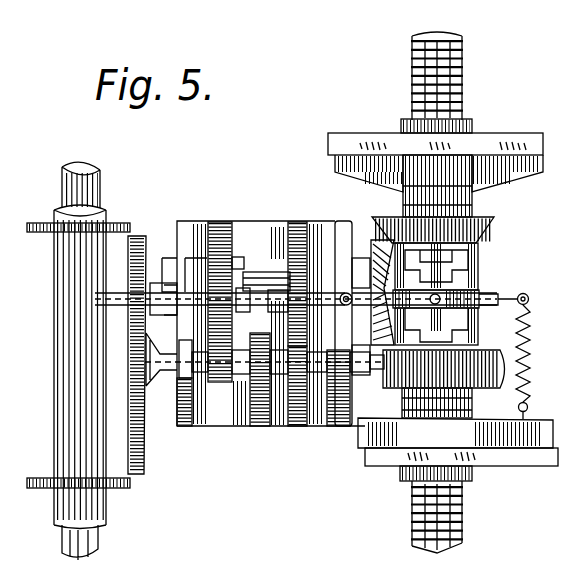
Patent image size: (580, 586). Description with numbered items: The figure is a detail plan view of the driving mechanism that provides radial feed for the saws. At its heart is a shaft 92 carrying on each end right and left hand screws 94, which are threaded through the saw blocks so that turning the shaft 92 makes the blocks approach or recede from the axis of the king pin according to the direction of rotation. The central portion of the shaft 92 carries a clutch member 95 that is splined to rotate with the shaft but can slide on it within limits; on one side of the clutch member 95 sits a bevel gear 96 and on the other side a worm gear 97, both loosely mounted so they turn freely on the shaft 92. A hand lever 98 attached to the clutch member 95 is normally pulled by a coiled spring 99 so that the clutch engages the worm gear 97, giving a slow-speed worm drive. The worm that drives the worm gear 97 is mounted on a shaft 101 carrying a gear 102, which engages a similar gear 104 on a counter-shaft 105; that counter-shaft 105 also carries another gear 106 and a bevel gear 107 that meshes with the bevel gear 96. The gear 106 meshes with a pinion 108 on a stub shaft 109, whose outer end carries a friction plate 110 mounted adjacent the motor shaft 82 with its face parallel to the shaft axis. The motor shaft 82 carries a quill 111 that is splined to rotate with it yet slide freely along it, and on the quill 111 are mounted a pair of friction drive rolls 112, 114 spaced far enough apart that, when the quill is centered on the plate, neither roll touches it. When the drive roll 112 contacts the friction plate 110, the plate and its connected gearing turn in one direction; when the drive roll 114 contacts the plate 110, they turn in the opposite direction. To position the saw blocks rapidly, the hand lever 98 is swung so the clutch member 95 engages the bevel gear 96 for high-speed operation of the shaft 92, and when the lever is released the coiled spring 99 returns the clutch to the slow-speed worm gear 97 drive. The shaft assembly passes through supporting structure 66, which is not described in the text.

The motor shaft 82 is at (101, 182).
The quill 111 is at (56, 350).
The friction drive roll 112 is at (48, 233).
The friction drive roll 114 is at (42, 489).
The friction plate 110 is at (141, 471).
The pinion 108 is at (213, 427).
The gear 106 is at (227, 210).
The counter-shaft 105 is at (248, 290).
The gear 104 is at (293, 225).
The gear 102 is at (293, 428).
The stub shaft 109 is at (240, 427).
The shaft 101 is at (323, 428).
The hand lever 98 is at (301, 297).
The bevel gear 107 is at (370, 241).
The right and left hand screws 94 is at (463, 86).
The beam 66 is at (357, 138).
The bevel gear 96 is at (493, 224).
The clutch member 95 is at (478, 277).
The shaft 92 is at (471, 342).
The worm gear 97 is at (484, 388).
The coiled spring 99 is at (531, 357).